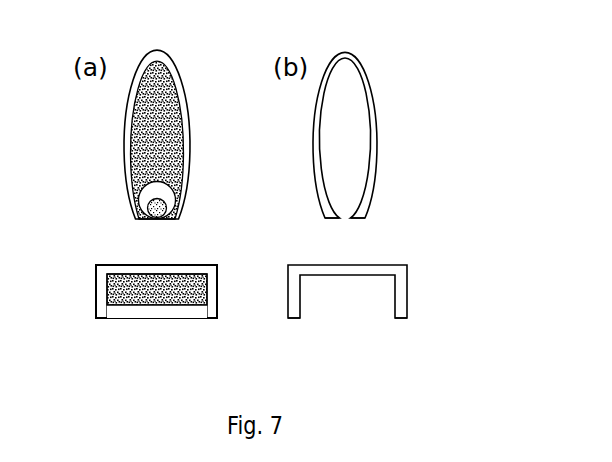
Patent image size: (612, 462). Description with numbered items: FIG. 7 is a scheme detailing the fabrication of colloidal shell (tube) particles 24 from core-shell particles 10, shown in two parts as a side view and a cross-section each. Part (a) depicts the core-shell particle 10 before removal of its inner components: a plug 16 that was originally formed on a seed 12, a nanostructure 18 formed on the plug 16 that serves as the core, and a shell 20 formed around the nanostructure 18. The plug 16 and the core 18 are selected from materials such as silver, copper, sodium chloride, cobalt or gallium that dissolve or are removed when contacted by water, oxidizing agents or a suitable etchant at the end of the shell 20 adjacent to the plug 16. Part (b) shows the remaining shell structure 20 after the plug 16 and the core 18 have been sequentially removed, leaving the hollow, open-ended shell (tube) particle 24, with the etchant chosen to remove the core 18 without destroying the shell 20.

The core-shell particle 10 is at (183, 93).
The seed 12 is at (162, 213).
The plug 16 is at (140, 200).
The nanostructure 18 is at (140, 152).
The shell 20 is at (128, 100).
The shell (tube) particle 24 is at (380, 135).